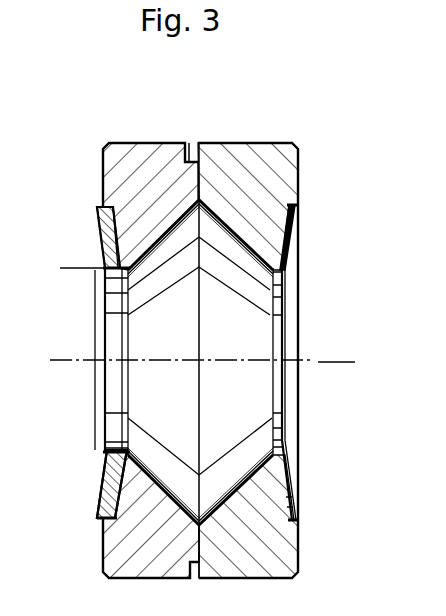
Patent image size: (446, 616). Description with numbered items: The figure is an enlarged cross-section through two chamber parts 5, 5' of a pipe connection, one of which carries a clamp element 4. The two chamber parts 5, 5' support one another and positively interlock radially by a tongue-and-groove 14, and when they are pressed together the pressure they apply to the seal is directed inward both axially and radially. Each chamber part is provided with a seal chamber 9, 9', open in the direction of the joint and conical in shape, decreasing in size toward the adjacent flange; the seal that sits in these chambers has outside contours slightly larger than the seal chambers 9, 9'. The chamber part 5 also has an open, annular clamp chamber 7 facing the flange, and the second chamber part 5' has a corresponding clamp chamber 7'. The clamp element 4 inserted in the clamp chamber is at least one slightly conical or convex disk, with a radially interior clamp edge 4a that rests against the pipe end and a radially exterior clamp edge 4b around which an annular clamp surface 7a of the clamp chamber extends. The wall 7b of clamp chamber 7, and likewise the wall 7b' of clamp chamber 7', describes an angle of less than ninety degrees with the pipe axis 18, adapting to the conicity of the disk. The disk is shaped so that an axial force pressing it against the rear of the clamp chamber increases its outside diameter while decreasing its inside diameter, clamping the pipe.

The chamber part 5 is at (134, 355).
The chamber part 5' is at (265, 344).
The groove 14 is at (192, 143).
The clamp element 4 is at (105, 466).
The radially interior clamp edge 4a is at (105, 274).
The radially exterior clamp edge 4b is at (103, 520).
The clamp chamber 7 is at (93, 360).
The clamp chamber 7' is at (311, 357).
The annular clamp surface 7a is at (297, 216).
The wall of the clamp chamber 7b is at (87, 484).
The wall of the clamp chamber 7b' is at (324, 480).
The seal chamber 9 is at (97, 361).
The seal chamber 9' is at (299, 361).
The pipe axis 18 is at (338, 363).